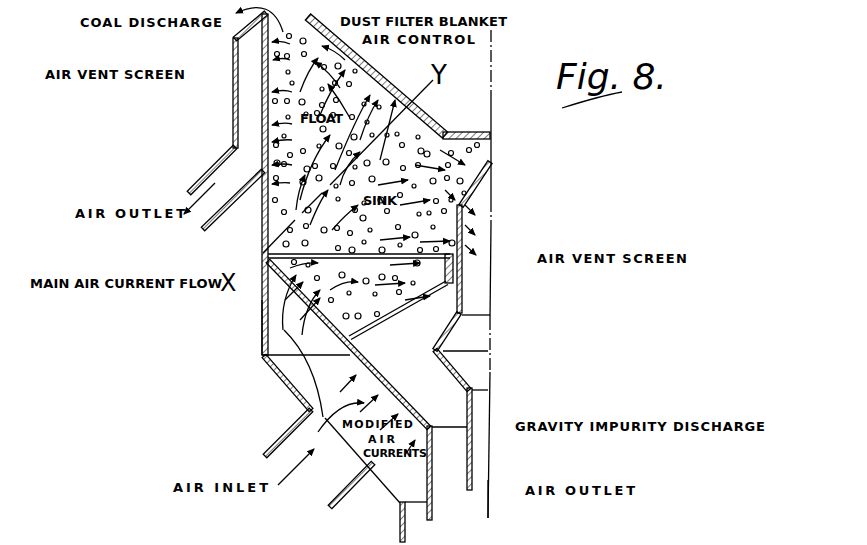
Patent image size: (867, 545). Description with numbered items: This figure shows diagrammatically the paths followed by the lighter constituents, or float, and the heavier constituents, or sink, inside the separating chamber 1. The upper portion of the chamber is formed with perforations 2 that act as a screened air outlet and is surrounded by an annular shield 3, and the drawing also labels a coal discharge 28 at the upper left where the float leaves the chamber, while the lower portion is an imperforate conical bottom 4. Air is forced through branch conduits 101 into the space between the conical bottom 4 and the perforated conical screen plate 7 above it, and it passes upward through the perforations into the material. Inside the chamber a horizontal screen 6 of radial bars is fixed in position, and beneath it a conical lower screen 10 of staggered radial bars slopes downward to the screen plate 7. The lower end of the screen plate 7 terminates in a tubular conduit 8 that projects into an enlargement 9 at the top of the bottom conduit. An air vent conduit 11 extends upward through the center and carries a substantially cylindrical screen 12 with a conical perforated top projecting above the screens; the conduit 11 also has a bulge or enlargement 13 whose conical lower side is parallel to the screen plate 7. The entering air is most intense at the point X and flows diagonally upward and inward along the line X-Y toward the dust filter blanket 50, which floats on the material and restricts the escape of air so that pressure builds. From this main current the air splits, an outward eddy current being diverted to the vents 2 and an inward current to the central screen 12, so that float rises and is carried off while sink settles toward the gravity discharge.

The separating chamber 1 is at (262, 340).
The perforations 2 is at (262, 72).
The annular shield 3 is at (233, 107).
The conical bottom 4 is at (288, 390).
The horizontal screen 6 is at (350, 252).
The conical screen plate 7 is at (306, 318).
The tubular conduit 8 is at (450, 448).
The enlargement 9 is at (400, 523).
The conical lower screen 10 is at (368, 327).
The air vent conduit 11 is at (483, 483).
The cylindrical screen 12 is at (465, 243).
The bulge or enlargement 13 is at (462, 374).
The coal discharge chute 28 is at (212, 167).
The dust filter blanket 50 is at (370, 64).
The branch conduits 101 is at (270, 436).